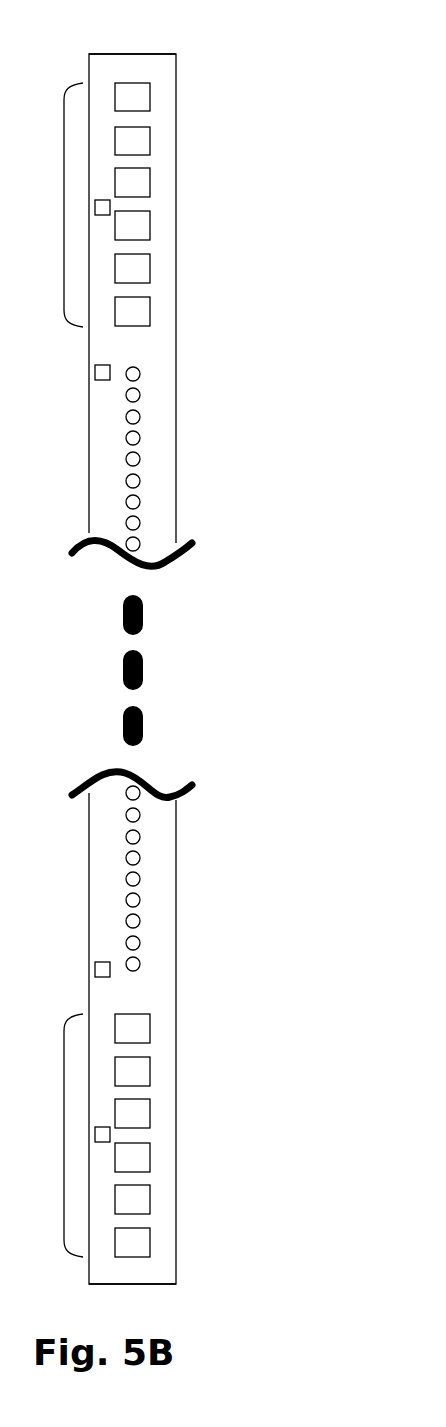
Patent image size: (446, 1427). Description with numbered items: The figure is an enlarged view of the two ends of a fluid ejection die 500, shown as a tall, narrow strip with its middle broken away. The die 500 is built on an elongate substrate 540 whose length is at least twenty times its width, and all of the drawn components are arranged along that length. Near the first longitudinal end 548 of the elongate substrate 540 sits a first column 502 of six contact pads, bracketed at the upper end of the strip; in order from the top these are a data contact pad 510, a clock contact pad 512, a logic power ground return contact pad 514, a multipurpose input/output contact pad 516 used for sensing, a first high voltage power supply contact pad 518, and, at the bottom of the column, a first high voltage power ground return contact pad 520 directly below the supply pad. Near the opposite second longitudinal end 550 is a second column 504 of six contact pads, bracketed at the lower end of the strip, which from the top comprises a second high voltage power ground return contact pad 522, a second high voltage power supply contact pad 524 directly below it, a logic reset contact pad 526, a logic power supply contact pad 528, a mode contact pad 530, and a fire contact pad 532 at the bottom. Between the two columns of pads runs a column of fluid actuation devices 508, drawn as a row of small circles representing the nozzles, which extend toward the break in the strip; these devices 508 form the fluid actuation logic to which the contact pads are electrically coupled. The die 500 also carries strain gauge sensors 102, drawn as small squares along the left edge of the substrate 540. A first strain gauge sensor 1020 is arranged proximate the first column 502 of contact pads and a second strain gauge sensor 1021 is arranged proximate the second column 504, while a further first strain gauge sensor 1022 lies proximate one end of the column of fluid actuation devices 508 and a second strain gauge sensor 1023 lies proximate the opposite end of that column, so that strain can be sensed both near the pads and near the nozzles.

The fluid ejection die 500 is at (238, 42).
The first column of contact pads 502 is at (62, 203).
The second column of contact pads 504 is at (62, 1135).
The fluid actuation devices 508 is at (140, 481).
The data contact pad 510 is at (150, 88).
The clock contact pad 512 is at (150, 132).
The logic power ground return contact pad 514 is at (150, 173).
The multipurpose input/output contact pad 516 is at (150, 216).
The first high voltage power supply contact pad 518 is at (150, 259).
The first high voltage power ground return contact pad 520 is at (150, 302).
The second high voltage power ground return contact pad 522 is at (150, 1019).
The second high voltage power supply contact pad 524 is at (150, 1062).
The logic reset contact pad 526 is at (150, 1104).
The logic power supply contact pad 528 is at (150, 1148).
The mode contact pad 530 is at (150, 1190).
The fire contact pad 532 is at (150, 1233).
The elongate substrate 540 is at (89, 498).
The first longitudinal end 548 is at (137, 54).
The second longitudinal end 550 is at (137, 1285).
The strain gauge sensor 102 is at (57, 699).
The first strain gauge sensor 1020 is at (95, 207).
The second strain gauge sensor 1021 is at (95, 1135).
The first strain gauge sensor 1022 is at (95, 368).
The second strain gauge sensor 1023 is at (95, 963).